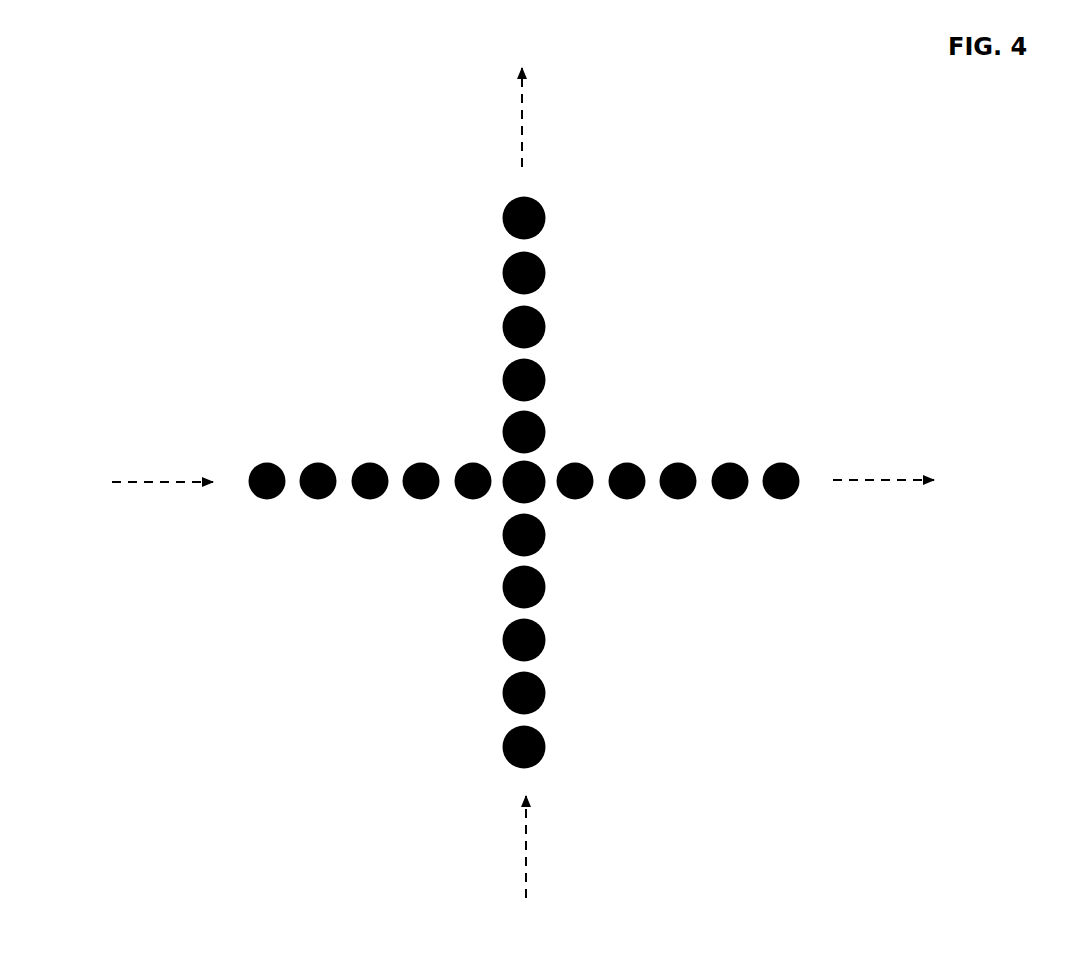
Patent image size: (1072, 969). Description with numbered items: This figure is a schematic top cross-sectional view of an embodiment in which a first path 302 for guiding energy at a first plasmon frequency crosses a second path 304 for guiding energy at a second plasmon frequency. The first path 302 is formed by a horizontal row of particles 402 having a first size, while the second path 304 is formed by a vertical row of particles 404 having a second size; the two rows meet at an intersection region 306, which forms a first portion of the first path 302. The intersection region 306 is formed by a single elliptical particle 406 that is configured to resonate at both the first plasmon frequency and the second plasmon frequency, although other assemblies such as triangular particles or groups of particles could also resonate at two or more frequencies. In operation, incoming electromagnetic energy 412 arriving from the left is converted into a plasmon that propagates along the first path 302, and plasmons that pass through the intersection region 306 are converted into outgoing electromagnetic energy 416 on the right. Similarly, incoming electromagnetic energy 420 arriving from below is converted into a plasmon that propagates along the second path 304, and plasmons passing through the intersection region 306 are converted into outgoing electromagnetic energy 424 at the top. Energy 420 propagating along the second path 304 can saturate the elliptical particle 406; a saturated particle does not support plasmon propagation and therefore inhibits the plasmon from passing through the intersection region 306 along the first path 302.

The first path 302 is at (494, 433).
The second path 304 is at (554, 483).
The intersection region 306 is at (598, 521).
The particles having a first size 402 is at (372, 463).
The particles having a second size 404 is at (505, 588).
The elliptical particle 406 is at (550, 500).
The incoming electromagnetic energy 412 is at (134, 483).
The outgoing electromagnetic energy 416 is at (910, 481).
The incoming electromagnetic energy 420 is at (527, 864).
The outgoing electromagnetic energy 424 is at (523, 98).